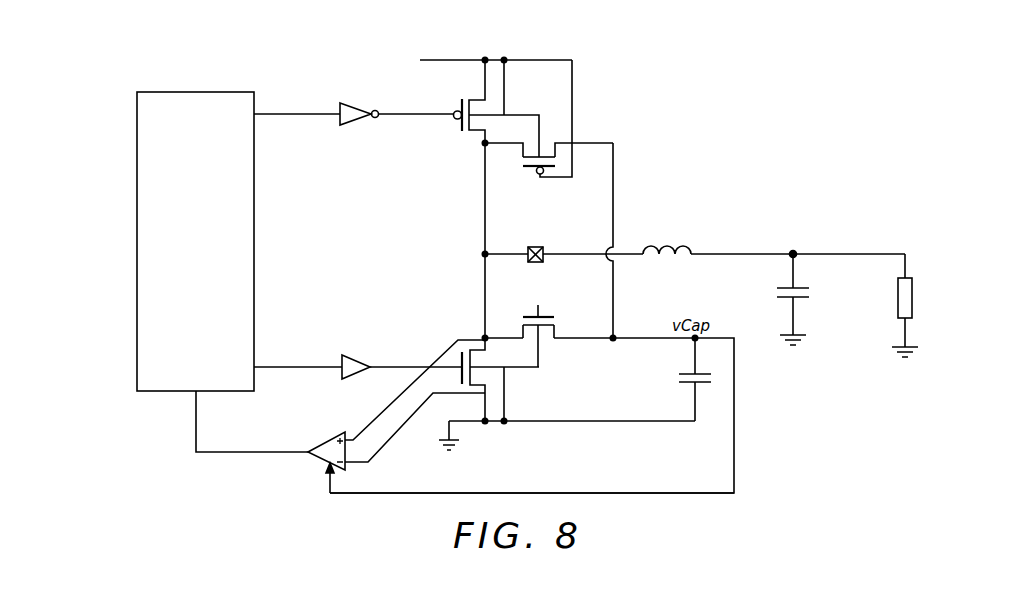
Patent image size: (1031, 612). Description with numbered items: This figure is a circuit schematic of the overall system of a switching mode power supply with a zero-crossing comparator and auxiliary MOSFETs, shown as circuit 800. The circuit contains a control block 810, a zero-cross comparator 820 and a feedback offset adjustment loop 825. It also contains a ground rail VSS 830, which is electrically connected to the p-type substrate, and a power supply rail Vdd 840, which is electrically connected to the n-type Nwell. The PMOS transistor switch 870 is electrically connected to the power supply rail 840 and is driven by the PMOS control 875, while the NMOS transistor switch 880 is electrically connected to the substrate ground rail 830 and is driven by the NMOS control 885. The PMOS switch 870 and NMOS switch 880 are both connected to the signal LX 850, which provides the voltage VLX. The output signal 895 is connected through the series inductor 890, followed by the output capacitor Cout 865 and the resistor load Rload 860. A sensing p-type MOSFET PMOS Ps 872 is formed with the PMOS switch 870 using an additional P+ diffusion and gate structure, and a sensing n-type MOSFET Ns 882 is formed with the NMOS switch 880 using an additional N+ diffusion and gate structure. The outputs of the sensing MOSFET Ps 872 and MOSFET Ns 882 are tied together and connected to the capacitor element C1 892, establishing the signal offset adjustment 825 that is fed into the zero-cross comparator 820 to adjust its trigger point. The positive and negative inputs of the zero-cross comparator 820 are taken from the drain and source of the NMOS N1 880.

The circuit 800 is at (750, 128).
The control block 810 is at (203, 90).
The zero-cross comparator 820 is at (317, 461).
The feedback offset adjustment loop 825 is at (600, 472).
The ground rail VSS 830 is at (468, 443).
The power supply rail Vdd 840 is at (446, 44).
The signal LX 850 is at (553, 236).
The resistor load Rload 860 is at (926, 290).
The output capacitor Cout 865 is at (830, 291).
The PMOS transistor switch 870 is at (450, 88).
The sensing p-type MOSFET PMOS Ps 872 is at (538, 190).
The PMOS control 875 is at (326, 108).
The NMOS transistor switch 880 is at (521, 379).
The sensing n-type MOSFET Ns 882 is at (540, 303).
The NMOS control 885 is at (325, 360).
The series inductor 890 is at (667, 262).
The capacitor element C1 892 is at (658, 372).
The output signal 895 is at (844, 230).